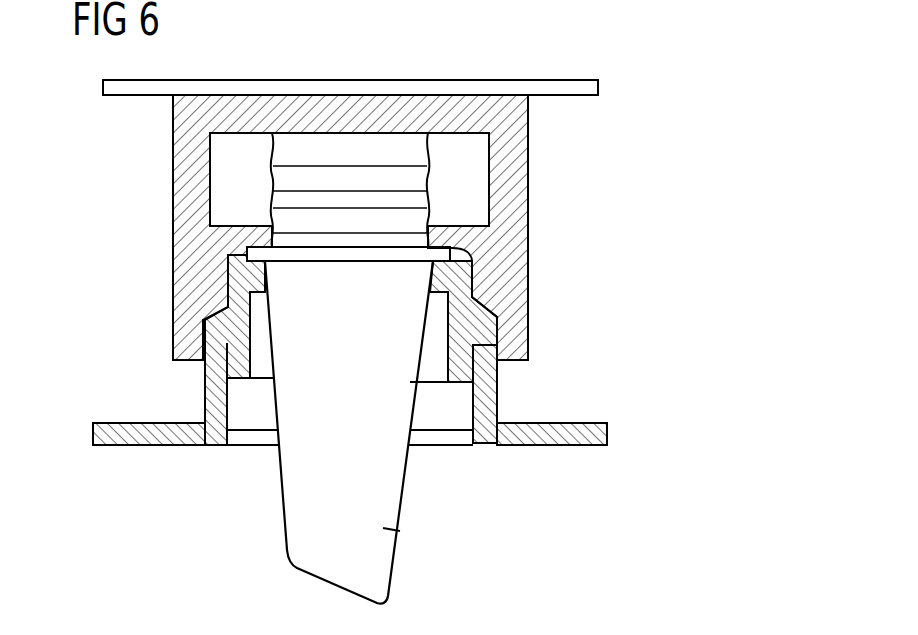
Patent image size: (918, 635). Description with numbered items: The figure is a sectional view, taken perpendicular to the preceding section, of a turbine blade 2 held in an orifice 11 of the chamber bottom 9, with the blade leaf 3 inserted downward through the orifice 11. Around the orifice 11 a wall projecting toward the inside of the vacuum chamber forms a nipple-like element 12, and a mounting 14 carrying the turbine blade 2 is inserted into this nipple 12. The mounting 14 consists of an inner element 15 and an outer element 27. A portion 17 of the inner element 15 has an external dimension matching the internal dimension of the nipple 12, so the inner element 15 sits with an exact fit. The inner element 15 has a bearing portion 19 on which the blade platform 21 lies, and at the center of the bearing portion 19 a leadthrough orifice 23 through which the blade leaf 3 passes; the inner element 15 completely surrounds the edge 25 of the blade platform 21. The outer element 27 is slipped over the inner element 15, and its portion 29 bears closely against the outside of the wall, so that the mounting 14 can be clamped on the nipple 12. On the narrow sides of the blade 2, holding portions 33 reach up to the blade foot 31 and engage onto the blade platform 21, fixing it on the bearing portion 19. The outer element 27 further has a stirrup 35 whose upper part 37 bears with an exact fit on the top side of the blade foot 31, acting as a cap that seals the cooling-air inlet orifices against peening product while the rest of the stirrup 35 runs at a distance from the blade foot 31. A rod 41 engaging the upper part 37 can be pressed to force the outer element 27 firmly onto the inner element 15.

The turbine blade 2 is at (427, 497).
The blade leaf 3 is at (383, 528).
The chamber bottom 9 is at (550, 446).
The orifice 11 is at (240, 452).
The nipple-like element 12 is at (490, 398).
The mounting 14 is at (137, 194).
The inner element 15 is at (483, 324).
The portion of the inner element 17 is at (240, 370).
The bearing portion 19 is at (433, 277).
The blade platform 21 is at (326, 262).
The leadthrough orifice 23 is at (432, 348).
The edge of the blade platform 25 is at (243, 256).
The outer element 27 is at (515, 258).
The portion of the outer element 29 is at (178, 364).
The blade foot 31 is at (348, 145).
The holding portions 33 is at (258, 226).
The stirrup 35 is at (520, 148).
The upper part of the stirrup 37 is at (398, 105).
The rod 41 is at (556, 90).